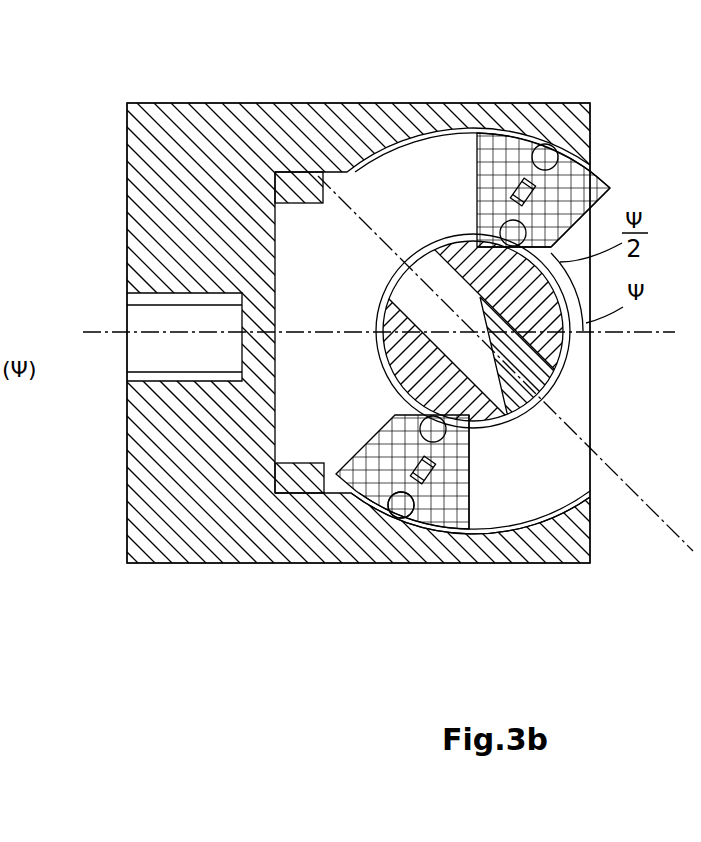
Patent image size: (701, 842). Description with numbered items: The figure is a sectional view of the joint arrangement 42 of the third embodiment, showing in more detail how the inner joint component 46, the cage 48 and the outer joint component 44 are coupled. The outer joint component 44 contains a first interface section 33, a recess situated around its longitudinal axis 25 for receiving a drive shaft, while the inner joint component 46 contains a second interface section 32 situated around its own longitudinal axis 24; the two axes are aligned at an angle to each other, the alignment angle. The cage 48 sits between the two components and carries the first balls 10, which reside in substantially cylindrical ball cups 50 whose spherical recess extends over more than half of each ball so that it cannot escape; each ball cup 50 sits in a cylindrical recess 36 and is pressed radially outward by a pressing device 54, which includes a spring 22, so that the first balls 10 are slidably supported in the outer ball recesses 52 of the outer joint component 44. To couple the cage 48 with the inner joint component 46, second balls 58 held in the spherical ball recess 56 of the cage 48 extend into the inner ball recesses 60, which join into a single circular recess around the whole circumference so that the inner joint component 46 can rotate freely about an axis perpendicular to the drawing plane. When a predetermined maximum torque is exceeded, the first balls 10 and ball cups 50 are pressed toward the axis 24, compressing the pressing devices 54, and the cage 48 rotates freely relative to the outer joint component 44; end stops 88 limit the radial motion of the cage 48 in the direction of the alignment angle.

The first balls 10 is at (392, 507).
The spring 22 is at (462, 443).
The longitudinal axis of the inner joint component 24 is at (665, 523).
The longitudinal axis of the outer joint component 25 is at (100, 334).
The second interface section 32 is at (530, 366).
The first interface section 33 is at (160, 355).
The cylindrical recess 36 is at (458, 520).
The joint arrangement 42 is at (108, 78).
The outer joint component 44 is at (176, 124).
The inner joint component 46 is at (476, 245).
The cage 48 is at (548, 220).
The ball cups 50 is at (408, 518).
The outer ball recesses 52 is at (480, 130).
The pressing devices 54 is at (357, 453).
The spherical ball recess 56 is at (560, 162).
The second balls 58 is at (466, 128).
The inner ball recesses 60 is at (356, 168).
The end stops 88 is at (290, 492).